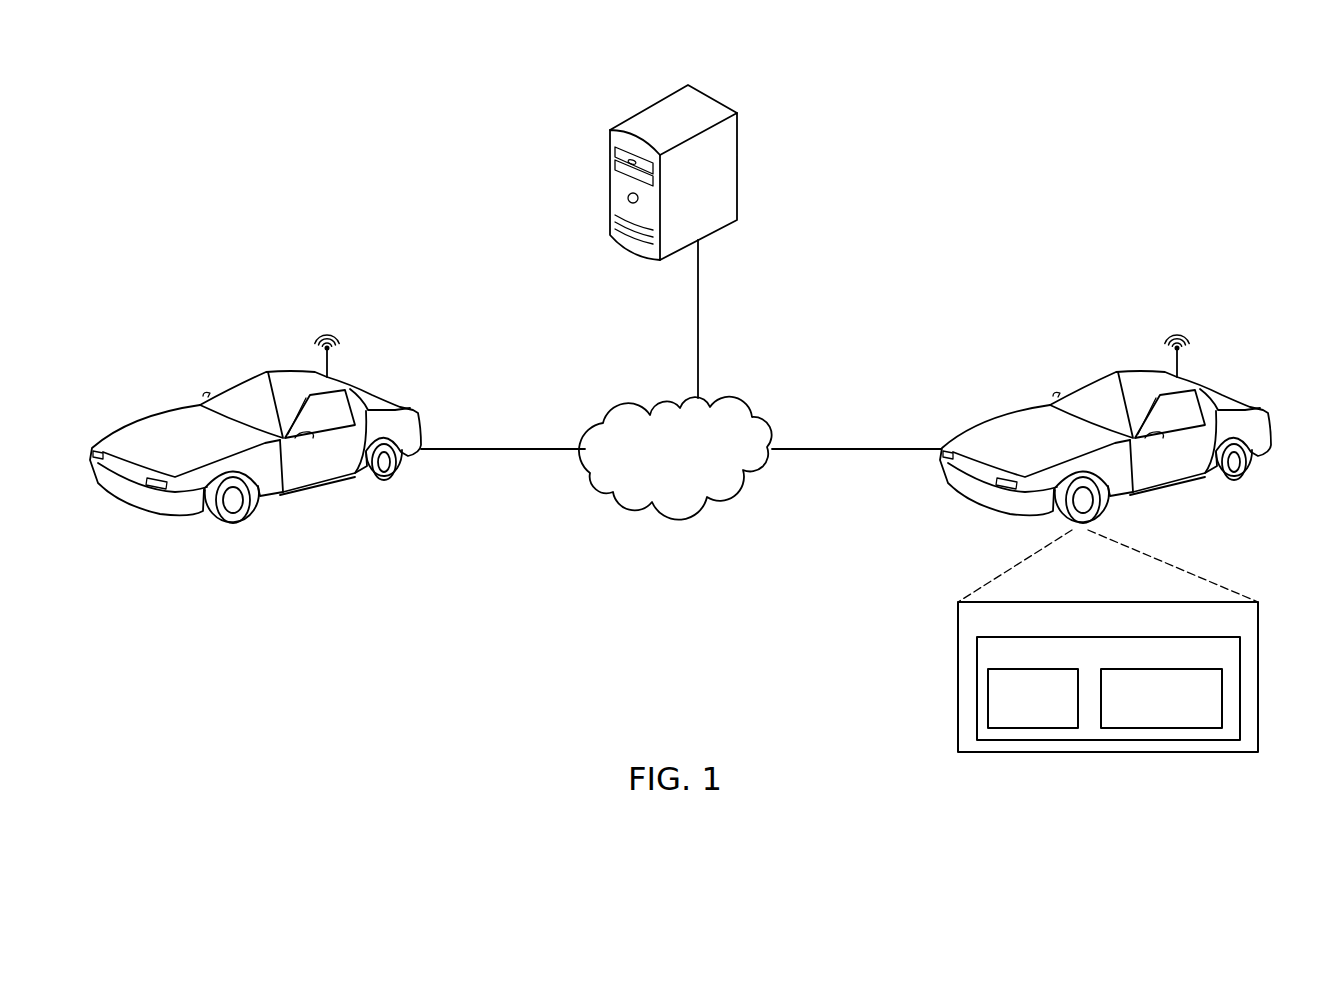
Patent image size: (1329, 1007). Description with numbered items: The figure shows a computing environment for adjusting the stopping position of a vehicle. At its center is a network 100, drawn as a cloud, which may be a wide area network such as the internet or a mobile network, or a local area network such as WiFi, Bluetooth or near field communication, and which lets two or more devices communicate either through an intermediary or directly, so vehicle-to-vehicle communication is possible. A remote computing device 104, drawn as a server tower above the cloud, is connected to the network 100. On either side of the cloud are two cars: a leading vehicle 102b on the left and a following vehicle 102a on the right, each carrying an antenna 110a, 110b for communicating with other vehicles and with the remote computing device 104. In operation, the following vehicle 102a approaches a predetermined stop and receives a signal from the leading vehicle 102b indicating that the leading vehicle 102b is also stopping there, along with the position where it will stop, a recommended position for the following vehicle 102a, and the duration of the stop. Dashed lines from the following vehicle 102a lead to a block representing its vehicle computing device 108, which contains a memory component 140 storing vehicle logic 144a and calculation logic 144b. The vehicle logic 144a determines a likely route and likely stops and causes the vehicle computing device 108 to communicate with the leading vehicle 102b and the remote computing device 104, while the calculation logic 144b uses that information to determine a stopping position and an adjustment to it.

The network 100 is at (733, 398).
The following vehicle 102a is at (1242, 400).
The leading vehicle 102b is at (392, 400).
The remote computing device 104 is at (738, 130).
The vehicle computing device 108 is at (1110, 673).
The antenna 110a is at (1180, 333).
The antenna 110b is at (330, 333).
The memory component 140 is at (1105, 688).
The vehicle logic 144a is at (988, 700).
The calculation logic 144b is at (1222, 698).